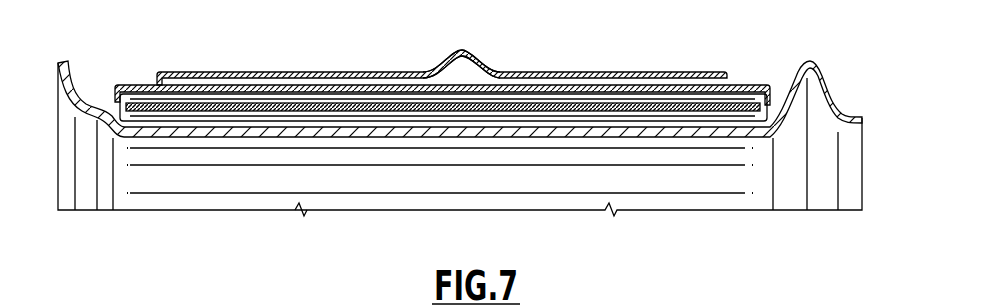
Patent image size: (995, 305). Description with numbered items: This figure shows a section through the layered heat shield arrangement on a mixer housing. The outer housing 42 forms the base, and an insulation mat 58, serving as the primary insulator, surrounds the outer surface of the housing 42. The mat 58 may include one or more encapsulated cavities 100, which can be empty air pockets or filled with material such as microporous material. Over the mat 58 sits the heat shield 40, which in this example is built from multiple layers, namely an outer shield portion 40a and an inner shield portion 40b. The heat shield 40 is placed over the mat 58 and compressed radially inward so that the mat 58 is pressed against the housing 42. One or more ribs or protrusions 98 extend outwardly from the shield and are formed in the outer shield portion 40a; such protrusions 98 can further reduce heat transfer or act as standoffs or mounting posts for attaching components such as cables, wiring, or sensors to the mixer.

The heat shield 40 is at (442, 42).
The outer shield portion 40a is at (207, 72).
The inner shield portion 40b is at (140, 83).
The outer housing 42 is at (812, 62).
The insulation mat 58 is at (735, 97).
The protrusions 98 is at (465, 48).
The encapsulated cavities 100 is at (297, 105).